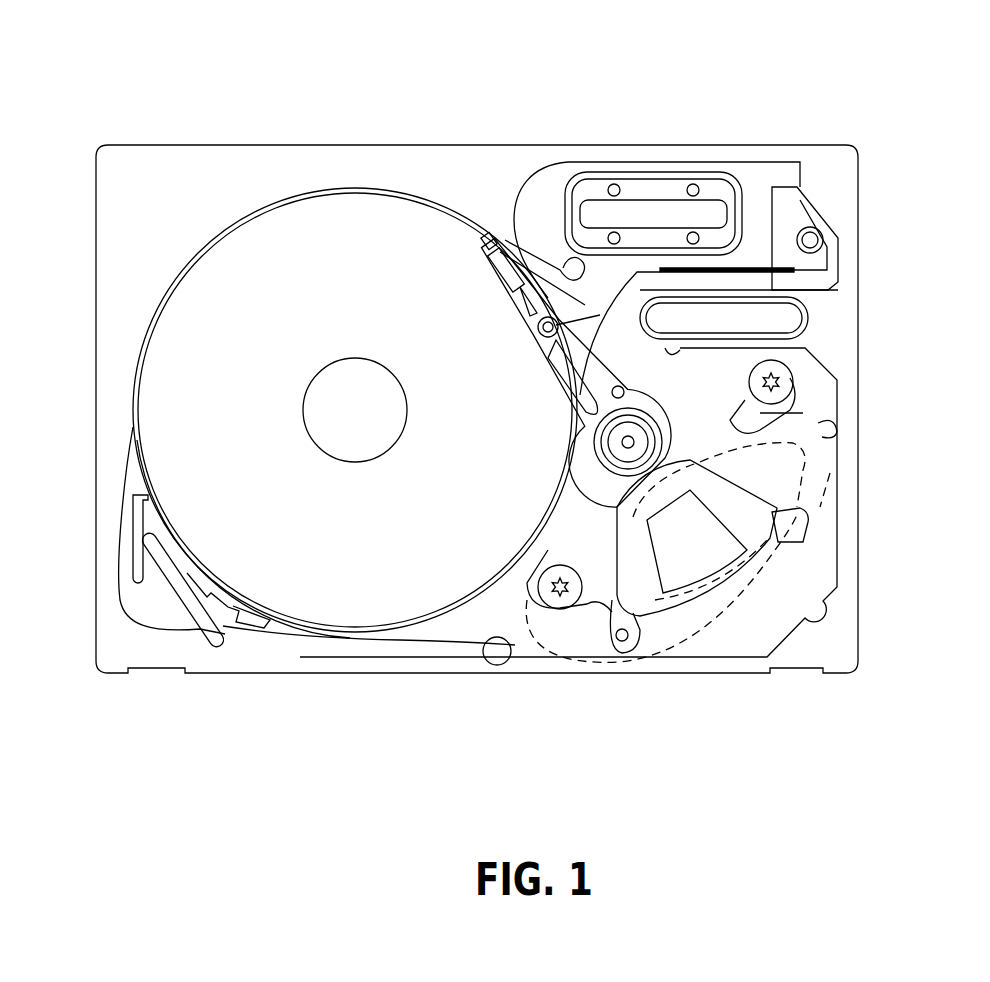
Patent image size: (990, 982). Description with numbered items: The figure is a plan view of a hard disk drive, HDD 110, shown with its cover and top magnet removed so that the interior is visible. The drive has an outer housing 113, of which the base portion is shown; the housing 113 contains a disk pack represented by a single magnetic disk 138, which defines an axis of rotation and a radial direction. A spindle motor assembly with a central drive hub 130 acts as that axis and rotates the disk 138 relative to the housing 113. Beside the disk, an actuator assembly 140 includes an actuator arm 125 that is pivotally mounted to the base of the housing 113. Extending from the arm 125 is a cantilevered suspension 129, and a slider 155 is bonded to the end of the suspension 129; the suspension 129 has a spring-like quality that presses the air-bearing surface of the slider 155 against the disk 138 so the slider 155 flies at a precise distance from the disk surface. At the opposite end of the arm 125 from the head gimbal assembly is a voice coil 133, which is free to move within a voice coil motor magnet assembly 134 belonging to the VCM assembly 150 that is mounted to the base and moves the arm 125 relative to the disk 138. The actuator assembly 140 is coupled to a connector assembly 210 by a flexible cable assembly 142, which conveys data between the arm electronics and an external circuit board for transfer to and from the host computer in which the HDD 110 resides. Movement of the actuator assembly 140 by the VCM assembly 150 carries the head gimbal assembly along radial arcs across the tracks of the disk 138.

The HDD 110 is at (226, 118).
The outer housing 113 is at (462, 145).
The actuator arm 125 is at (552, 345).
The cantilevered suspension 129 is at (520, 288).
The central drive hub 130 is at (355, 410).
The voice coil 133 is at (652, 492).
The voice coil motor magnet assembly 134 is at (818, 423).
The magnetic disk 138 is at (335, 188).
The actuator assembly 140 is at (596, 458).
The flexible cable assembly 142 is at (538, 328).
The VCM assembly 150 is at (773, 557).
The slider 155 is at (484, 243).
The connector assembly 210 is at (655, 217).